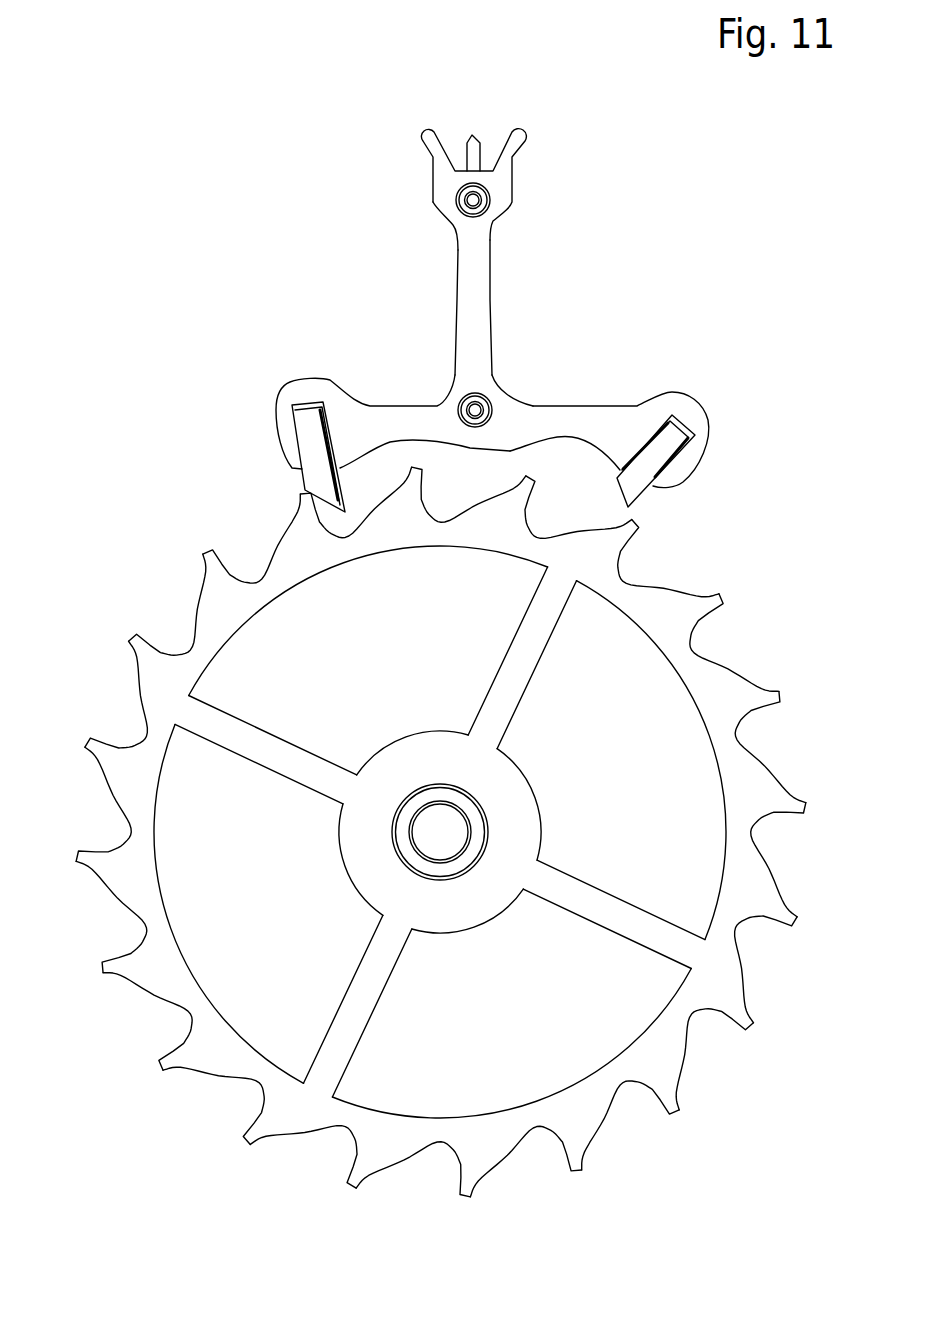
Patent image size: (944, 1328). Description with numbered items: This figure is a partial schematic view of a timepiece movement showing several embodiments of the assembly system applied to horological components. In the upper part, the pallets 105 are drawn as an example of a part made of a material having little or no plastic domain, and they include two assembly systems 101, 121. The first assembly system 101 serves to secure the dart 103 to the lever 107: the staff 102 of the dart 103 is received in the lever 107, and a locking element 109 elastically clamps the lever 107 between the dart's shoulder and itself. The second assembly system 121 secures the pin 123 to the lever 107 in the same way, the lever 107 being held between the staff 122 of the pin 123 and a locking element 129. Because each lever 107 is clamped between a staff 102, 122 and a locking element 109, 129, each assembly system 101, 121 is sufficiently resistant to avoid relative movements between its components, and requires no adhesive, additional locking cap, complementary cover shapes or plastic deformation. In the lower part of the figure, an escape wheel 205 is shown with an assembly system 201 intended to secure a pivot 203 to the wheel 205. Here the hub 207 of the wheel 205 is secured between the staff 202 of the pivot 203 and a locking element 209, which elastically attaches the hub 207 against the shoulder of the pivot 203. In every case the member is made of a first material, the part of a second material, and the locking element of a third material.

The assembly system 101 is at (562, 187).
The staff 102 is at (474, 200).
The dart 103 is at (476, 138).
The pallets 105 is at (722, 267).
The lever 107 is at (470, 275).
The locking element 109 is at (435, 207).
The assembly system 121 is at (488, 375).
The staff 122 is at (470, 408).
The pin 123 is at (517, 378).
The locking element 129 is at (497, 413).
The assembly system 201 is at (490, 775).
The staff 202 is at (437, 820).
The pivot 203 is at (543, 788).
The wheel 205 is at (147, 590).
The hub 207 is at (380, 885).
The locking element 209 is at (478, 835).